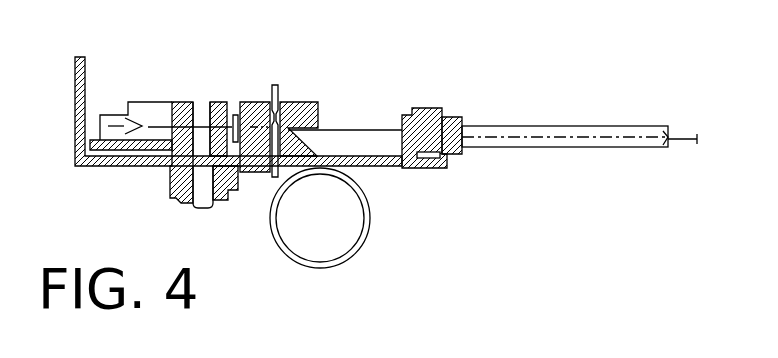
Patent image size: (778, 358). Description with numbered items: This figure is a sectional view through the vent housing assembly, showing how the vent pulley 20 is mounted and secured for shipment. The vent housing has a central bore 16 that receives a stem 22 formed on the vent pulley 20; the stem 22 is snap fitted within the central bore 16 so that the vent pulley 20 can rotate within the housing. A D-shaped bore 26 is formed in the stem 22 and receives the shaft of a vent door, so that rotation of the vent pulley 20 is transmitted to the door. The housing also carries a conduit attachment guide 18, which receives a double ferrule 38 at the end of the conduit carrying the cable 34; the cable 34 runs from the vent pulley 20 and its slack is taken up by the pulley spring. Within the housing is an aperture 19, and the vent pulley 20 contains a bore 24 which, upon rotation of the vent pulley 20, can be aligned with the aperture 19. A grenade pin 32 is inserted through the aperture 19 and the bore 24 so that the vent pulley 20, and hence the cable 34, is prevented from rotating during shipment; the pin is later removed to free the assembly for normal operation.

The central bore 16 is at (168, 178).
The conduit attachment guide 18 is at (412, 168).
The aperture 19 is at (258, 167).
The vent pulley 20 is at (291, 103).
The stem 22 is at (222, 203).
The bore 24 is at (323, 145).
The D-shaped bore 26 is at (205, 112).
The grenade pin 32 is at (367, 233).
The cable 34 is at (376, 131).
The double ferrule 38 is at (461, 156).